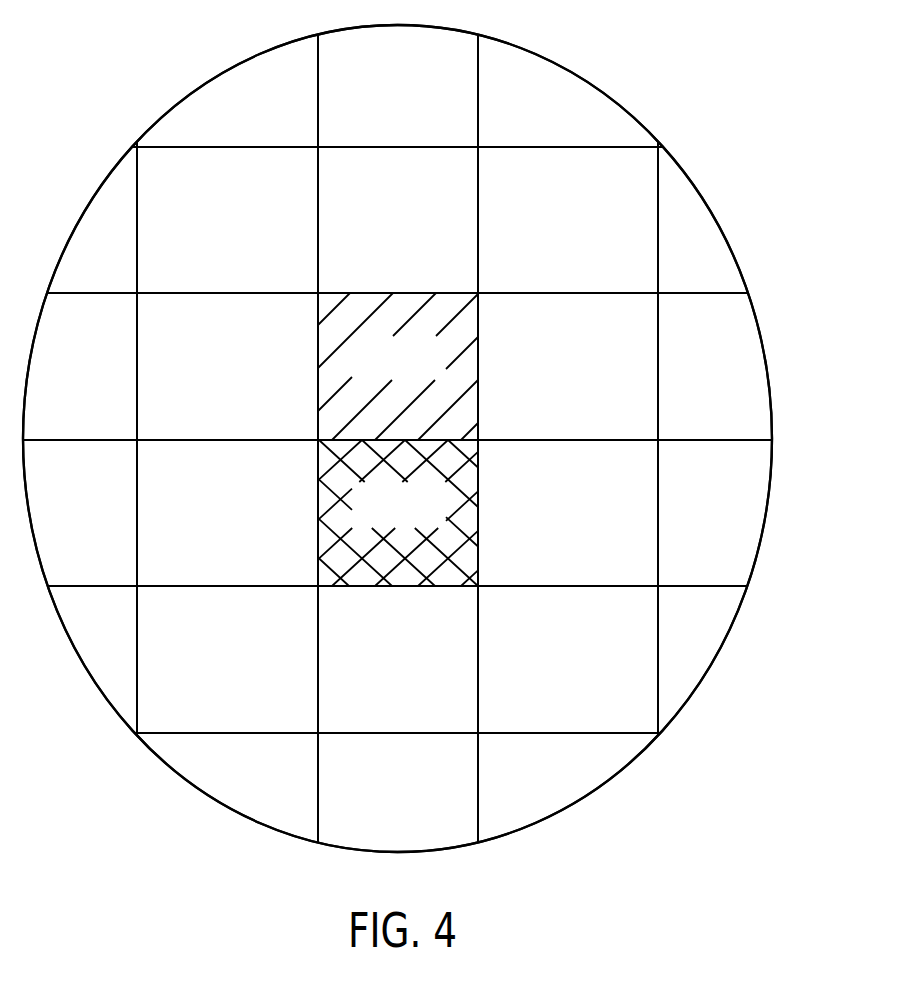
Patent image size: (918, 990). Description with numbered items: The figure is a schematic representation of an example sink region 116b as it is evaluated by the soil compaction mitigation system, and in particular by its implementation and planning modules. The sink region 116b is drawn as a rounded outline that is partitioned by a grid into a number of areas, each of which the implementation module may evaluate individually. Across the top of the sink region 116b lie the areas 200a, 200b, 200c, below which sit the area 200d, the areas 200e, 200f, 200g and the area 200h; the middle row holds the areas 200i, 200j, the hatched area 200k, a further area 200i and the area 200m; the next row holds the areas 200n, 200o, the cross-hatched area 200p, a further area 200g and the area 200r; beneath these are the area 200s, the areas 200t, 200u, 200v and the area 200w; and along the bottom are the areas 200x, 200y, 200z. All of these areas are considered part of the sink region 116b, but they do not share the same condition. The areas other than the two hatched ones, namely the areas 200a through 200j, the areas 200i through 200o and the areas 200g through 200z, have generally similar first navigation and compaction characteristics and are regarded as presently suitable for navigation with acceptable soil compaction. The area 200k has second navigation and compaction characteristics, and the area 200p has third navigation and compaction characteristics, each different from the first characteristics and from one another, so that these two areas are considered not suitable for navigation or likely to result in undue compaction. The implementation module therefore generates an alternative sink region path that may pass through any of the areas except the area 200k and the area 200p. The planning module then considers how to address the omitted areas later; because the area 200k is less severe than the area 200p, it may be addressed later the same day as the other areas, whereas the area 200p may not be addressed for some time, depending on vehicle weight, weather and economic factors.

The sink region 116b is at (627, 110).
The area 200a is at (206, 122).
The area 200b is at (354, 122).
The area 200c is at (501, 122).
The area 200d is at (70, 279).
The area 200e is at (258, 228).
The area 200f is at (429, 228).
The area 200g is at (599, 228).
The area 200h is at (665, 279).
The area 200i is at (113, 373).
The area 200j is at (258, 373).
The area 200k is at (430, 373).
The area 200m is at (743, 373).
The area 200n is at (113, 520).
The area 200o is at (258, 520).
The area 200p is at (430, 520).
The area 200r is at (743, 520).
The area 200s is at (70, 625).
The area 200t is at (258, 666).
The area 200u is at (429, 666).
The area 200v is at (599, 666).
The area 200w is at (663, 625).
The area 200x is at (302, 781).
The area 200y is at (444, 781).
The area 200z is at (584, 781).